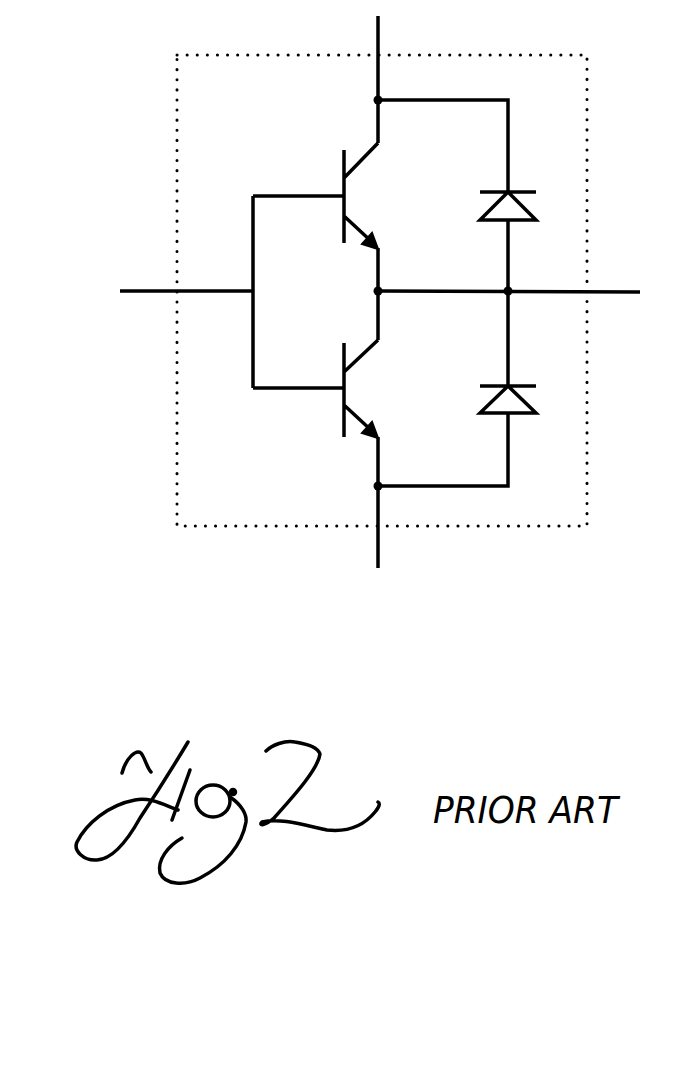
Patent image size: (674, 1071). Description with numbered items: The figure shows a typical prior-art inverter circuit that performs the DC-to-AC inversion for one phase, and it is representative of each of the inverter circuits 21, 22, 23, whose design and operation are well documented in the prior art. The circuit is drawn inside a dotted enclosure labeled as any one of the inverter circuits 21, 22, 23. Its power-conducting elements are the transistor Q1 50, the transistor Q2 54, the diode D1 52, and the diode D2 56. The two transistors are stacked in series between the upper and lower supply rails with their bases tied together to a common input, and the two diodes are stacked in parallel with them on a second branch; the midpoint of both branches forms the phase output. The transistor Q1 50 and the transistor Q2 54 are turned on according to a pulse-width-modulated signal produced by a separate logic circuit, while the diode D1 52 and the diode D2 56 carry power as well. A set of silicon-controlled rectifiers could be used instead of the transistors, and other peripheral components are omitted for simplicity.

The inverter circuit 21 is at (378, 357).
The inverter circuit 22 is at (378, 357).
The inverter circuit 23 is at (263, 523).
The transistor Q1 50 is at (340, 178).
The diode D1 52 is at (508, 195).
The transistor Q2 54 is at (342, 408).
The diode D2 56 is at (514, 415).